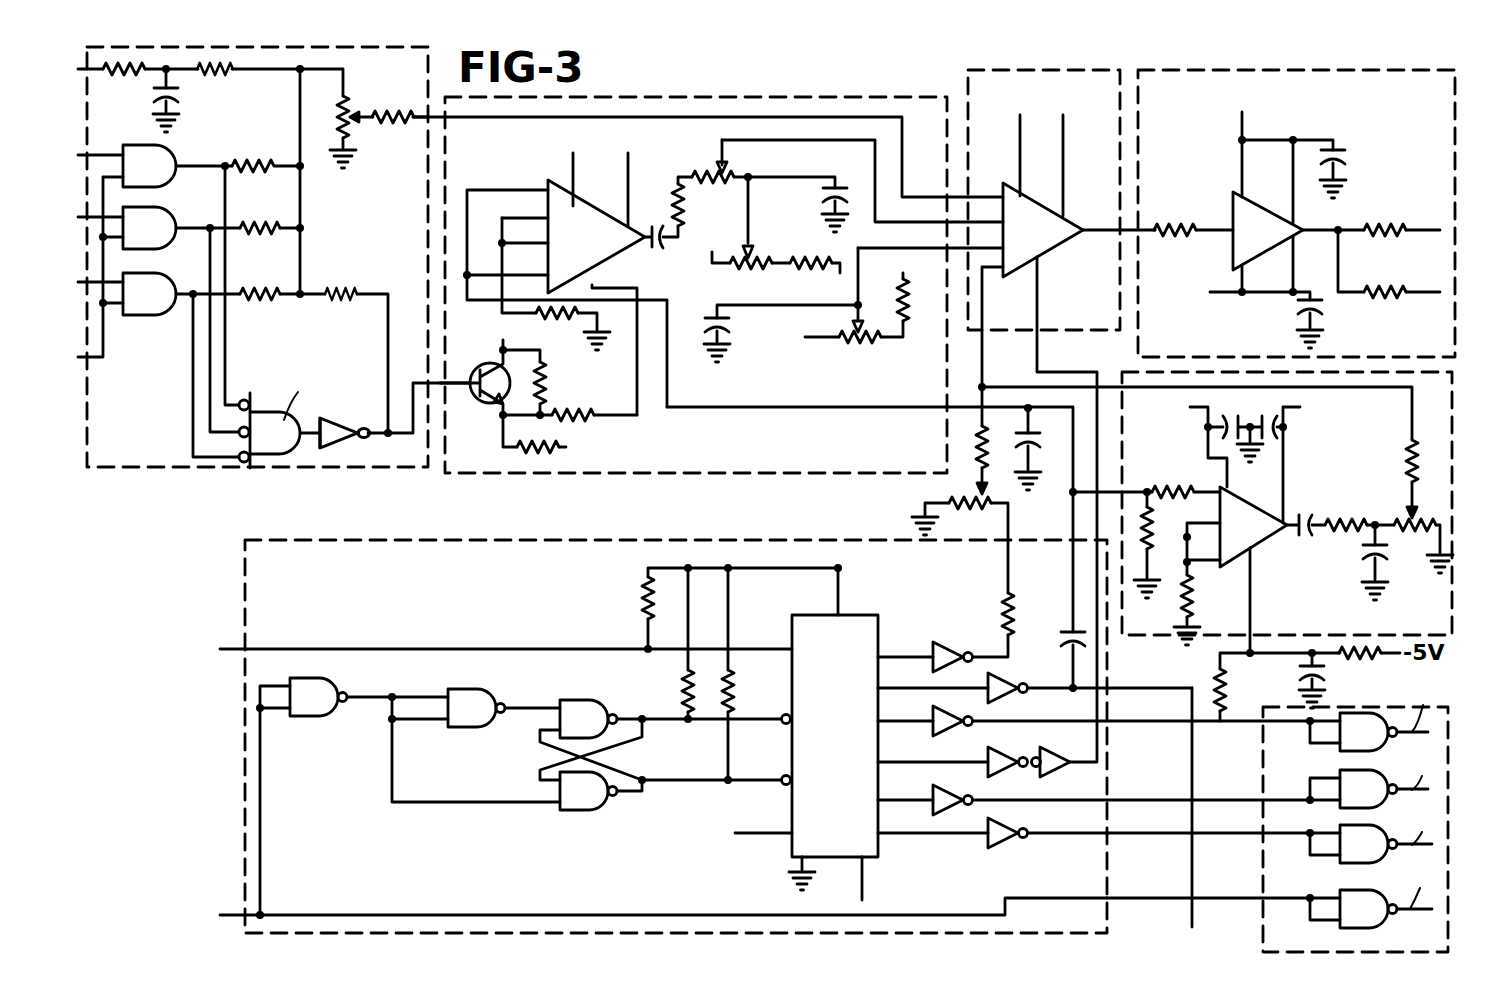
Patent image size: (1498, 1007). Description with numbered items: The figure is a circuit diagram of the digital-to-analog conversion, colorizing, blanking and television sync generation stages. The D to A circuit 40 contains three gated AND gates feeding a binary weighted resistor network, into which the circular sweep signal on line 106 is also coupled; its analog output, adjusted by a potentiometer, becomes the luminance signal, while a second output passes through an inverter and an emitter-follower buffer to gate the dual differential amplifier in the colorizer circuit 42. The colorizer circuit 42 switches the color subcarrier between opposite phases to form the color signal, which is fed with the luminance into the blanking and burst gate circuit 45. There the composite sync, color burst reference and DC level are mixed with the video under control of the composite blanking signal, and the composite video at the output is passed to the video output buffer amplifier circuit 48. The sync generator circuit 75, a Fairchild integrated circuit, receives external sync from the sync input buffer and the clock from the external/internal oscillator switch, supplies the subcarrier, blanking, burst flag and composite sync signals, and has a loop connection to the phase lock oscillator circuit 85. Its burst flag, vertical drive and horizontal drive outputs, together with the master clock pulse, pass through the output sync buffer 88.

The line 106 is at (94, 72).
The D to A circuit 40 is at (138, 468).
The colorizer circuit 42 is at (575, 474).
The blanking and burst gate circuit 45 is at (966, 84).
The video output buffer amplifier circuit 48 is at (1325, 78).
The sync generator circuit 75 is at (448, 540).
The output sync buffer 88 is at (1262, 948).
The phase lock oscillator circuit 85 is at (1190, 913).